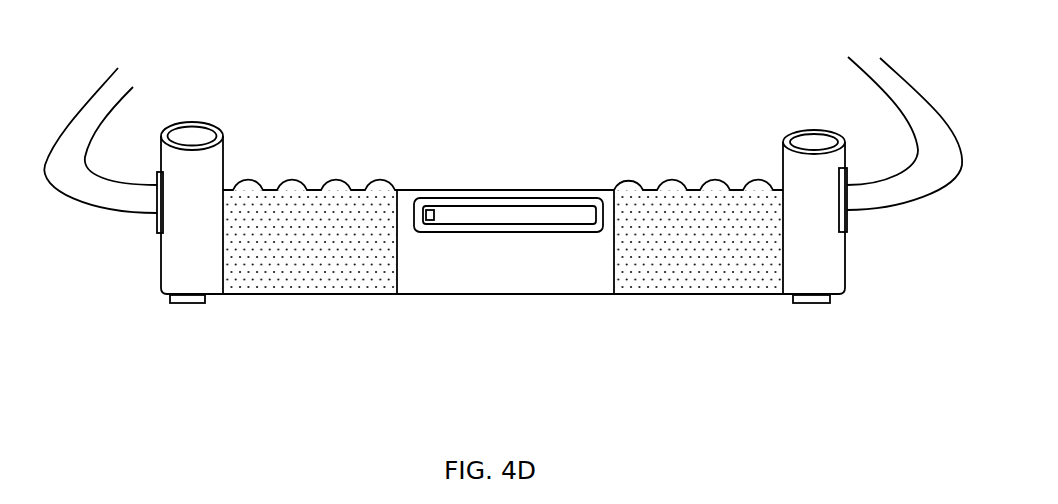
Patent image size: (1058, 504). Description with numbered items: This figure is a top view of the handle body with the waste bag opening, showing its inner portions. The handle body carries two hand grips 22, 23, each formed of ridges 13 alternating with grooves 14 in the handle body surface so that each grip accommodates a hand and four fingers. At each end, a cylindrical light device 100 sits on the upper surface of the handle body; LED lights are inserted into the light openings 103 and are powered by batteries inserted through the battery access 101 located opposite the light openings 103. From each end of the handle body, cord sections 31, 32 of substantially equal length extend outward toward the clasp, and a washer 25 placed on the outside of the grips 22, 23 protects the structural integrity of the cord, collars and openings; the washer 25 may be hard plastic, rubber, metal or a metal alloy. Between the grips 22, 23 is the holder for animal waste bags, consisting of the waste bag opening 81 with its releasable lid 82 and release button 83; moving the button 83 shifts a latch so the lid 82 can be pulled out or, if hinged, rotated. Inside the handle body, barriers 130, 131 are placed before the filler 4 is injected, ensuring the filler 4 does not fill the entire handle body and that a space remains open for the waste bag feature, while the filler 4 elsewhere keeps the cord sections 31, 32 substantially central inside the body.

The filler 4 is at (262, 282).
The ridges 13 is at (330, 176).
The grooves 14 is at (298, 177).
The grip 22 is at (325, 200).
The grip 23 is at (703, 207).
The washer 25 is at (848, 238).
The cord section 31 is at (900, 102).
The cord section 32 is at (71, 136).
The waste bag opening 81 is at (490, 213).
The lid 82 is at (554, 212).
The release button 83 is at (430, 212).
The light device 100 is at (187, 133).
The battery access 101 is at (182, 306).
The light opening 103 is at (203, 123).
The barrier 130 is at (610, 283).
The barrier 131 is at (398, 291).